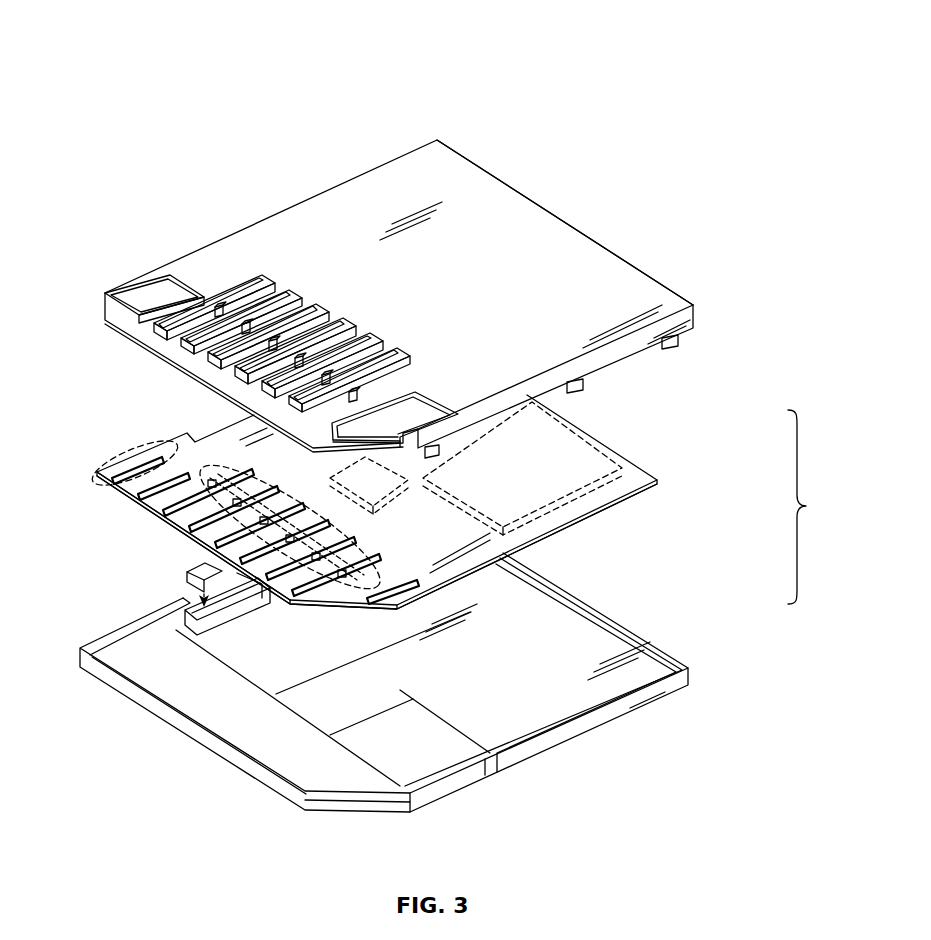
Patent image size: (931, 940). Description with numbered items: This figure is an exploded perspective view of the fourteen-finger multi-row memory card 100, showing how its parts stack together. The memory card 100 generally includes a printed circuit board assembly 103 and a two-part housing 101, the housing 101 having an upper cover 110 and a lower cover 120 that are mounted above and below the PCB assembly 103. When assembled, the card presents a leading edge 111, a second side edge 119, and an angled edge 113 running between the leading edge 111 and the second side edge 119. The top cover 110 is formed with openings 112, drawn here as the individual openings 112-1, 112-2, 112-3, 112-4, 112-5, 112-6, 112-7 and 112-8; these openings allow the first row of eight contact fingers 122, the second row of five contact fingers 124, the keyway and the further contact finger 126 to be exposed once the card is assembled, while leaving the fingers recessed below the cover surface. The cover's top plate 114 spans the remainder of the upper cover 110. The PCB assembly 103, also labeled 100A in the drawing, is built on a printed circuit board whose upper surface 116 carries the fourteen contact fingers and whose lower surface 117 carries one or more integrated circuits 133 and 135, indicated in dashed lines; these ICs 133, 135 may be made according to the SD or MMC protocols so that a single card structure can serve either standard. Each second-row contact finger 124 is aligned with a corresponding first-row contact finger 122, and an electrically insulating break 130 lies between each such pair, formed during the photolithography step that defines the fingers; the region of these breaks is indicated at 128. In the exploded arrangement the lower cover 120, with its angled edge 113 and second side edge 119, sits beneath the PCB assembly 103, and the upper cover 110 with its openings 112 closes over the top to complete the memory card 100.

The memory card 100 is at (116, 64).
The printed circuit board assembly 100A is at (654, 475).
The housing 101 is at (819, 507).
The printed circuit board assembly 103 is at (150, 520).
The upper cover 110 is at (690, 344).
The leading edge 111 is at (132, 327).
The openings 112 is at (212, 447).
The opening 112-1 is at (447, 410).
The opening 112-2 is at (402, 373).
The opening 112-3 is at (373, 353).
The opening 112-4 is at (348, 333).
The opening 112-5 is at (312, 321).
The opening 112-6 is at (282, 303).
The opening 112-7 is at (250, 284).
The opening 112-8 is at (135, 298).
The angled edge 113 is at (356, 806).
The top plate 114 is at (470, 252).
The upper surface 116 is at (586, 506).
The lower surface 117 is at (569, 536).
The second side edge 119 is at (525, 752).
The lower cover 120 is at (680, 651).
The contact fingers 122 is at (96, 456).
The contact fingers 124 is at (220, 450).
The contact finger 126 is at (410, 576).
The bridge element 128 is at (226, 455).
The electrically insulating break 130 is at (340, 565).
The integrated circuit 133 is at (392, 480).
The integrated circuit 135 is at (535, 472).